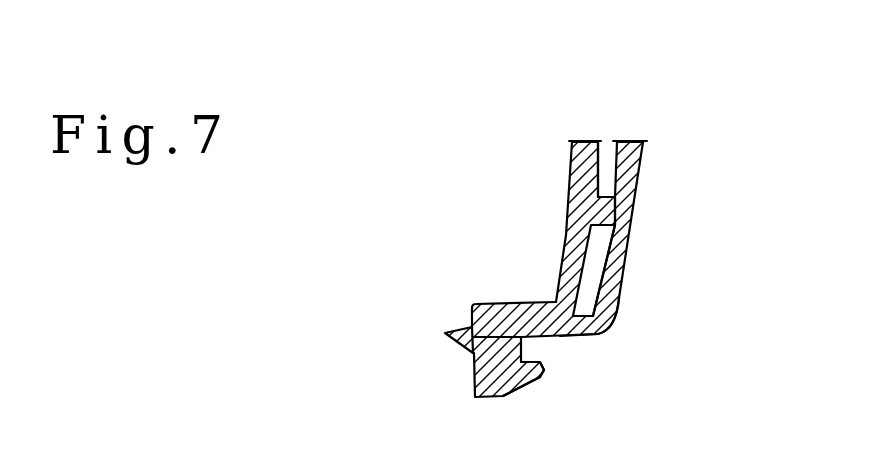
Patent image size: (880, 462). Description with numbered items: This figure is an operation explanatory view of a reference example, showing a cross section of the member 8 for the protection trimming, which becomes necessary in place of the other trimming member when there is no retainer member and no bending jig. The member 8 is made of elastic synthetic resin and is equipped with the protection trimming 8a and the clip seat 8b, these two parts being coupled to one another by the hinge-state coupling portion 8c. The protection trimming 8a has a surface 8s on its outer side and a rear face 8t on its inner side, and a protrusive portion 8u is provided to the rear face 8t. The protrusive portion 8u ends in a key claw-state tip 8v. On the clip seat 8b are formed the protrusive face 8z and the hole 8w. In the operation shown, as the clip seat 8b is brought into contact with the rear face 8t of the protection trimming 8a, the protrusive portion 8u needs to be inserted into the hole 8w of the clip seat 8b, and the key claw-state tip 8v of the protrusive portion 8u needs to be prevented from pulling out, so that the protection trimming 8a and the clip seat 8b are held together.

The member for the protection trimming 8 is at (637, 182).
The protection trimming 8a is at (630, 246).
The clip seat 8b is at (568, 208).
The rear face of the protection trimming 8t is at (617, 163).
The protrusive face 8z is at (636, 213).
The surface of the protection trimming 8s is at (615, 308).
The hole 8w is at (482, 305).
The key claw-state tip of the protrusive portion 8v is at (443, 336).
The protrusive portion 8u is at (475, 382).
The hinge-state coupling portion 8c is at (533, 392).